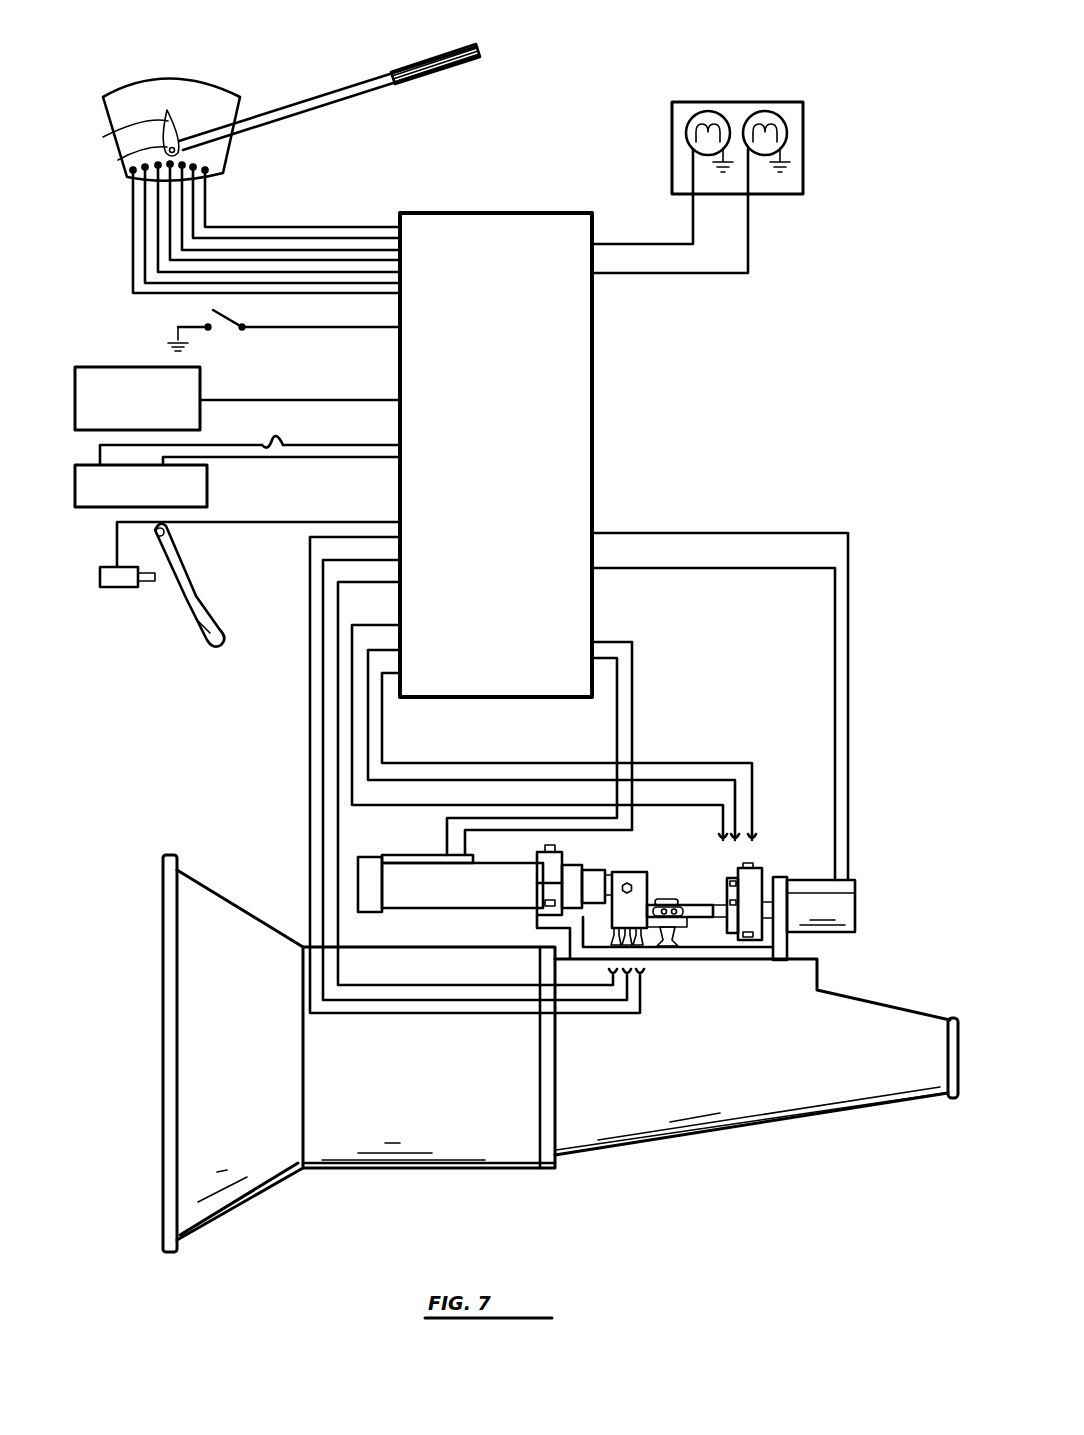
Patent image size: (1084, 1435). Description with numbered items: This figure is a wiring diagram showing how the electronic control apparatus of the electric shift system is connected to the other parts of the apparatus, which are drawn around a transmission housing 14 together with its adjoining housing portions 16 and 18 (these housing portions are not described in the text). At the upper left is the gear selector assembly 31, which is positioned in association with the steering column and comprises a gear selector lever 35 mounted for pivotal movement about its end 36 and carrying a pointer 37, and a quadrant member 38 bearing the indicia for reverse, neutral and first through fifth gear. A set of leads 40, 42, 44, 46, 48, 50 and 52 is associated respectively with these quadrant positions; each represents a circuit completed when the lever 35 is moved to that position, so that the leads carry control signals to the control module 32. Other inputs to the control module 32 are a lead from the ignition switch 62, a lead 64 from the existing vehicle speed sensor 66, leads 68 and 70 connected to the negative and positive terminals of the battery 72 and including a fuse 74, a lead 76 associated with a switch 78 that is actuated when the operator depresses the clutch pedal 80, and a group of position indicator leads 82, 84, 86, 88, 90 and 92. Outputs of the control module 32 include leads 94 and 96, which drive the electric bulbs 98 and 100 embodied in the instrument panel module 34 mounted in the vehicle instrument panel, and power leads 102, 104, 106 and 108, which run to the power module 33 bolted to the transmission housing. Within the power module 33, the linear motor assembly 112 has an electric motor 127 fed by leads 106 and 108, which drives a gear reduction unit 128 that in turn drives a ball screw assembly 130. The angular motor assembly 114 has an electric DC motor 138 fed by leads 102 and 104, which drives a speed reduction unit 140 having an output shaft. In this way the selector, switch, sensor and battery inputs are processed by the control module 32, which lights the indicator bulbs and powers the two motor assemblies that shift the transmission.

The transmission housing 14 is at (422, 1173).
The bell housing 16 is at (252, 905).
The tail housing 18 is at (660, 1071).
The gear selector assembly 31 is at (155, 62).
The control module 32 is at (522, 205).
The power module 33 is at (653, 885).
The instrument panel module 34 is at (818, 140).
The gear selector lever 35 is at (408, 62).
The end 36 is at (132, 173).
The pointer 37 is at (113, 140).
The quadrant member 38 is at (212, 73).
The lead 40 is at (390, 298).
The lead 42 is at (342, 283).
The lead 44 is at (293, 273).
The lead 46 is at (252, 260).
The lead 48 is at (290, 250).
The lead 50 is at (330, 238).
The lead 52 is at (363, 227).
The ignition switch 62 is at (222, 321).
The lead 64 is at (352, 400).
The speed sensor 66 is at (110, 367).
The lead 68 is at (377, 444).
The lead 70 is at (372, 460).
The battery 72 is at (141, 486).
The fuse 74 is at (268, 440).
The lead 76 is at (283, 522).
The switch 78 is at (120, 588).
The clutch pedal 80 is at (213, 622).
The position indicator lead 82 is at (308, 552).
The position indicator lead 84 is at (322, 592).
The position indicator lead 86 is at (338, 635).
The position indicator lead 88 is at (352, 668).
The position indicator lead 90 is at (368, 705).
The position indicator lead 92 is at (382, 742).
The lead 94 is at (653, 240).
The lead 96 is at (663, 273).
The electric bulb 98 is at (708, 111).
The electric bulb 100 is at (765, 111).
The power lead 102 is at (715, 533).
The power lead 104 is at (700, 568).
The power lead 106 is at (633, 667).
The power lead 108 is at (617, 727).
The linear motor assembly 112 is at (435, 830).
The angular motor assembly 114 is at (858, 884).
The electric motor 127 is at (431, 857).
The gear reduction unit 128 is at (350, 870).
The ball screw assembly 130 is at (457, 897).
The electric DC motor 138 is at (810, 880).
The speed reduction unit 140 is at (858, 912).